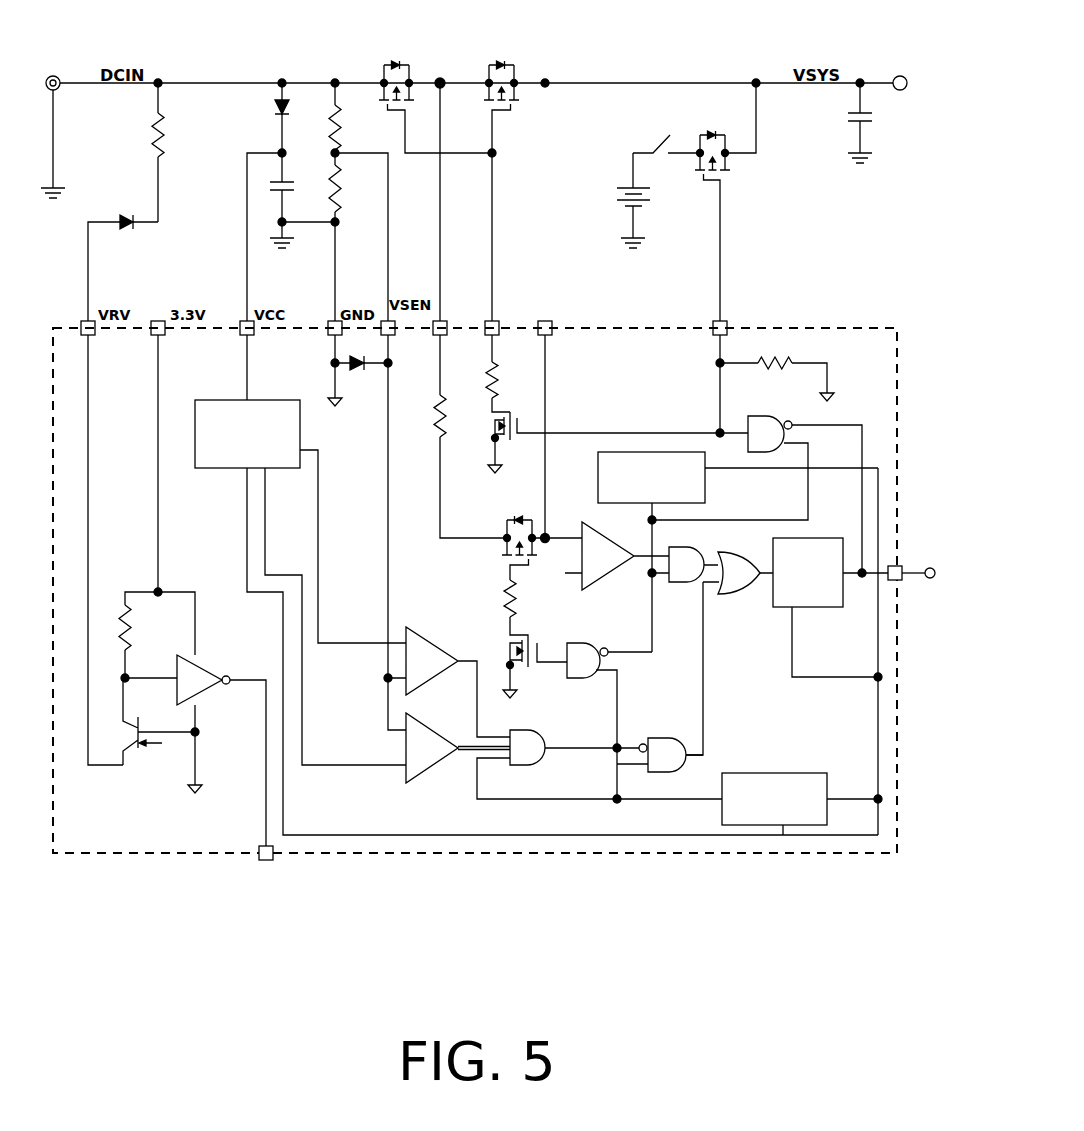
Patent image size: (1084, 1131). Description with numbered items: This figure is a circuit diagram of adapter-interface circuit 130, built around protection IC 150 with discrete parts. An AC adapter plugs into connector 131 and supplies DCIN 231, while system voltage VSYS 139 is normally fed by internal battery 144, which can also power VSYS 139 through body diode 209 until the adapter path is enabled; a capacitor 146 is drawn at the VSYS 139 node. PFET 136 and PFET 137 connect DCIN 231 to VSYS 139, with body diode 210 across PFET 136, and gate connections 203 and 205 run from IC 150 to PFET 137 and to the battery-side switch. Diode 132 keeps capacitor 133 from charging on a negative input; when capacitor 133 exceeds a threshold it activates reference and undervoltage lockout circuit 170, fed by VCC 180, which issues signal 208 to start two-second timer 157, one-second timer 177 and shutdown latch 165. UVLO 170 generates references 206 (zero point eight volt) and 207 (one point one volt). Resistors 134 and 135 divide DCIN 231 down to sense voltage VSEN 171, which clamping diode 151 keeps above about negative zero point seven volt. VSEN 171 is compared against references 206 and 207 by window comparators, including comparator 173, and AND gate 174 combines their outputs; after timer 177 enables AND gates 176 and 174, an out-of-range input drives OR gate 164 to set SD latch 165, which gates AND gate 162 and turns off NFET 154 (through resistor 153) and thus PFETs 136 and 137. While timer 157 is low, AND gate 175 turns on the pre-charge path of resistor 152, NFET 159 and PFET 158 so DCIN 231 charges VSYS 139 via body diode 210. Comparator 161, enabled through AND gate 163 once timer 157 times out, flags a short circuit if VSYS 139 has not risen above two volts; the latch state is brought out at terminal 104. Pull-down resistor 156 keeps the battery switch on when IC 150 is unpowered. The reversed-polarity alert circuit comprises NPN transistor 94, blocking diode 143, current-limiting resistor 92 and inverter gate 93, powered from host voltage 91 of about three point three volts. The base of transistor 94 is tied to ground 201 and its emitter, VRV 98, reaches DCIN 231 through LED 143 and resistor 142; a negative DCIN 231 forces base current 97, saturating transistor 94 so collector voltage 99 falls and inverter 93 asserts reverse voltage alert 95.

The connector 131 is at (53, 65).
The DCIN 231 is at (132, 57).
The diode 132 is at (275, 108).
The capacitor 133 is at (268, 186).
The resistor 134 is at (330, 108).
The resistor 135 is at (350, 187).
The PFET 136 is at (412, 92).
The PFET 137 is at (505, 80).
The system voltage VSYS 139 is at (900, 75).
The resistor 142 is at (168, 142).
The LED 143 is at (128, 230).
The internal battery 144 is at (608, 200).
The 200u capacitor 146 is at (843, 115).
The protection IC 150 is at (122, 853).
The clamping diode 151 is at (364, 380).
The resistor 152 is at (435, 418).
The 1k resistor 153 is at (528, 365).
The NFET 154 is at (512, 412).
The pull-down resistor 156 is at (775, 340).
The 2.0-second timer 157 is at (615, 452).
The PFET 158 is at (510, 518).
The NFET 159 is at (520, 670).
The comparator 161 is at (607, 532).
The AND gate 162 is at (760, 452).
The AND gate 163 is at (676, 582).
The OR gate 164 is at (738, 592).
The shutdown latch 165 is at (807, 607).
The reference and undervoltage lockout circuit 170 is at (230, 398).
The sense voltage VSEN 171 is at (393, 608).
The comparator 173 is at (410, 777).
The AND gate 174 is at (528, 767).
The AND gate 175 is at (582, 640).
The AND gate 176 is at (660, 738).
The 1.0-second timer 177 is at (738, 773).
The VCC 180 is at (249, 392).
The ground 201 is at (203, 782).
The gate drive line 203 is at (493, 268).
The gate drive line 205 is at (722, 227).
The reference voltage 206 is at (368, 605).
The reference voltage 207 is at (373, 757).
The signal 208 is at (878, 695).
The body diode 209 is at (708, 130).
The body diode 210 is at (387, 57).
The OUV output terminal 104 is at (933, 563).
The circuit 130 is at (722, 865).
The system voltage 91 is at (160, 538).
The current-limiting resistor 92 is at (135, 632).
The inverter gate 93 is at (200, 662).
The NPN transistor 94 is at (133, 750).
The reverse voltage alert 95 is at (267, 783).
The base current 97 is at (172, 728).
The VRV 98 is at (90, 454).
The collector voltage 99 is at (122, 680).